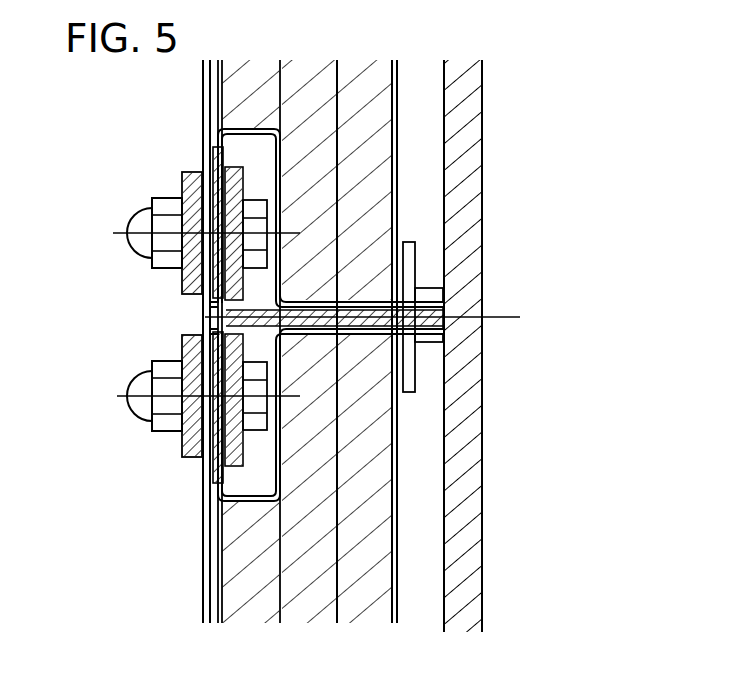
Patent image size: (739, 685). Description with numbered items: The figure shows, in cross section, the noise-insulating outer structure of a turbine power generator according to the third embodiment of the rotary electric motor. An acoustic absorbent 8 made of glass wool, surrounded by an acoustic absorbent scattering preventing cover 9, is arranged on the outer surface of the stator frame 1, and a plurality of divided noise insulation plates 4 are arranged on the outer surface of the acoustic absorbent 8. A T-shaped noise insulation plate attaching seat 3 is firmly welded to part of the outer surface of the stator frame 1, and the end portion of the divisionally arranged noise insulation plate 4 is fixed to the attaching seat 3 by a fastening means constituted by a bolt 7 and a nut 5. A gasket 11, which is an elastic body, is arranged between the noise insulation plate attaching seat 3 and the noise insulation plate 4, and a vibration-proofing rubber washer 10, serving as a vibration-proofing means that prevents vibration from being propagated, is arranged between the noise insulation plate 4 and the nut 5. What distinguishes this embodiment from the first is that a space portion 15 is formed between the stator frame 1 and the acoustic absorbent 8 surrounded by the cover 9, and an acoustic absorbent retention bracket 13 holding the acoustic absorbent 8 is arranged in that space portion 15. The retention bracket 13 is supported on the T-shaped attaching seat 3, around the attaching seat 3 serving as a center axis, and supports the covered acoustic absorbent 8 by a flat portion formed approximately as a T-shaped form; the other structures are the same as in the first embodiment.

The stator frame 1 is at (470, 450).
The T-shaped noise insulation plate attaching seat 3 is at (230, 327).
The noise insulation plate 4 is at (205, 560).
The nut 5 is at (160, 388).
The bolt 7 is at (257, 402).
The acoustic absorbent 8 is at (357, 130).
The acoustic absorbent scattering preventing cover 9 is at (398, 180).
The vibration-proofing rubber washer 10 is at (200, 366).
The gasket 11 is at (217, 477).
The acoustic absorbent retention bracket 13 is at (407, 263).
The space portion 15 is at (425, 217).